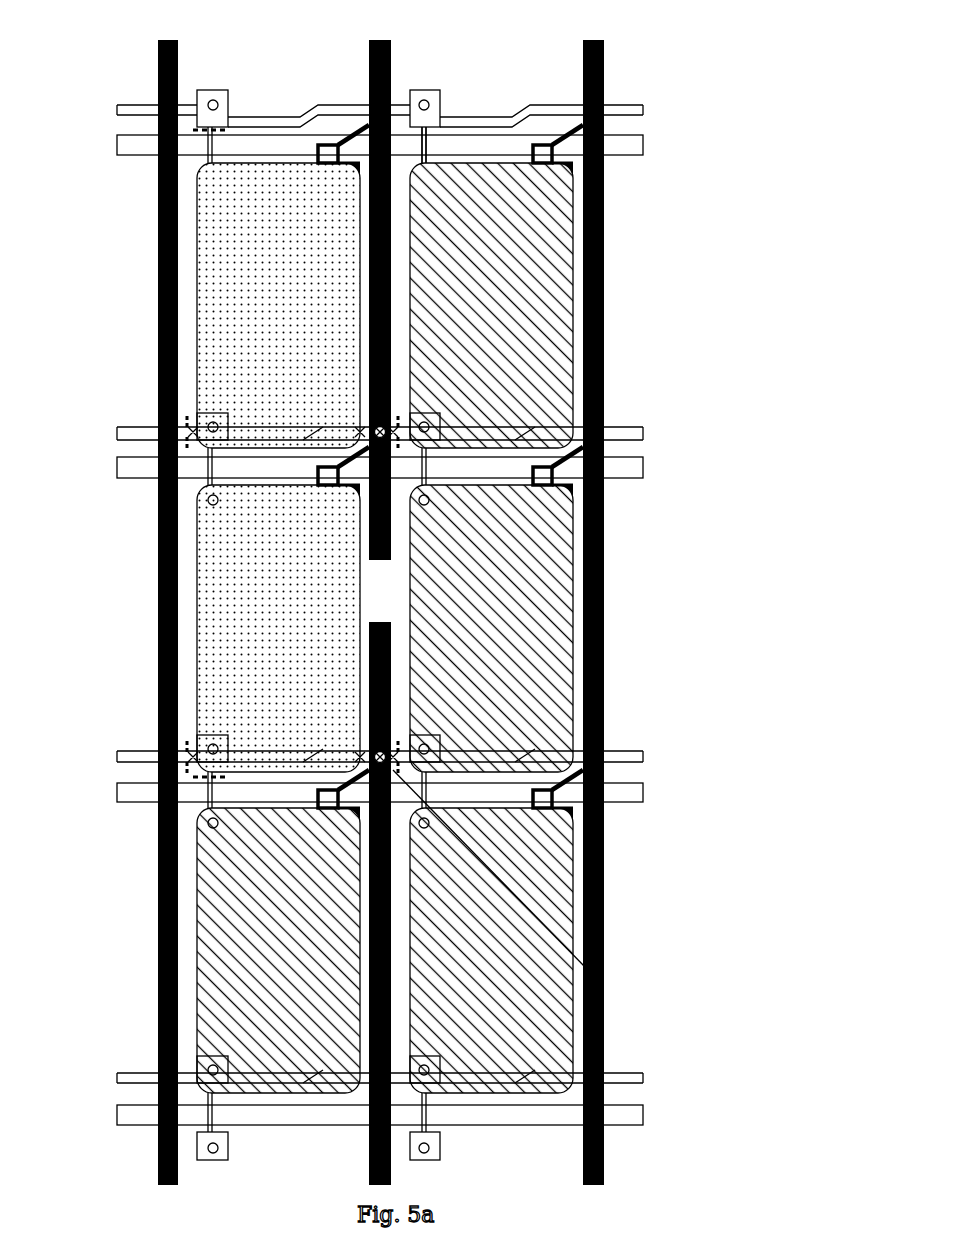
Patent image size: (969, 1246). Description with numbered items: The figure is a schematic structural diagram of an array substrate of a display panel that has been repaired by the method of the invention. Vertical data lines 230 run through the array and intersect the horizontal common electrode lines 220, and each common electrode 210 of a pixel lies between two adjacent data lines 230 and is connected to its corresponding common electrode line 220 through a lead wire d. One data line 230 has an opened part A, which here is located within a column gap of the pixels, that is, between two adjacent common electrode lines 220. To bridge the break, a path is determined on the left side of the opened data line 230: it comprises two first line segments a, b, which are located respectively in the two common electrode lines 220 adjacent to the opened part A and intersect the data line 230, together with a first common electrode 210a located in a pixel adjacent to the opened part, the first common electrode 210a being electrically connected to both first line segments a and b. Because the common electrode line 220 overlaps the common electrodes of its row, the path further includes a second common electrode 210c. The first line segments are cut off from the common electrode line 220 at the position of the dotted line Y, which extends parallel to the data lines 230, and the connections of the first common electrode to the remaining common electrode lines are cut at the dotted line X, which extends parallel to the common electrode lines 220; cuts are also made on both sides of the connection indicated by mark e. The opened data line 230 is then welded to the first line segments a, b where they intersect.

The data line 230 is at (388, 60).
The common electrode 210 is at (560, 365).
The first common electrode 210a is at (228, 605).
The second common electrode 210c is at (213, 305).
The common electrode line 220 is at (620, 432).
The opened part A is at (382, 598).
The dotted line X (cutting position) X is at (215, 128).
The dotted line Y (cutting position) Y is at (207, 448).
The first line segment a is at (253, 438).
The first line segment b is at (253, 760).
The lead wire d is at (425, 160).
The mark e (connection) e is at (213, 763).